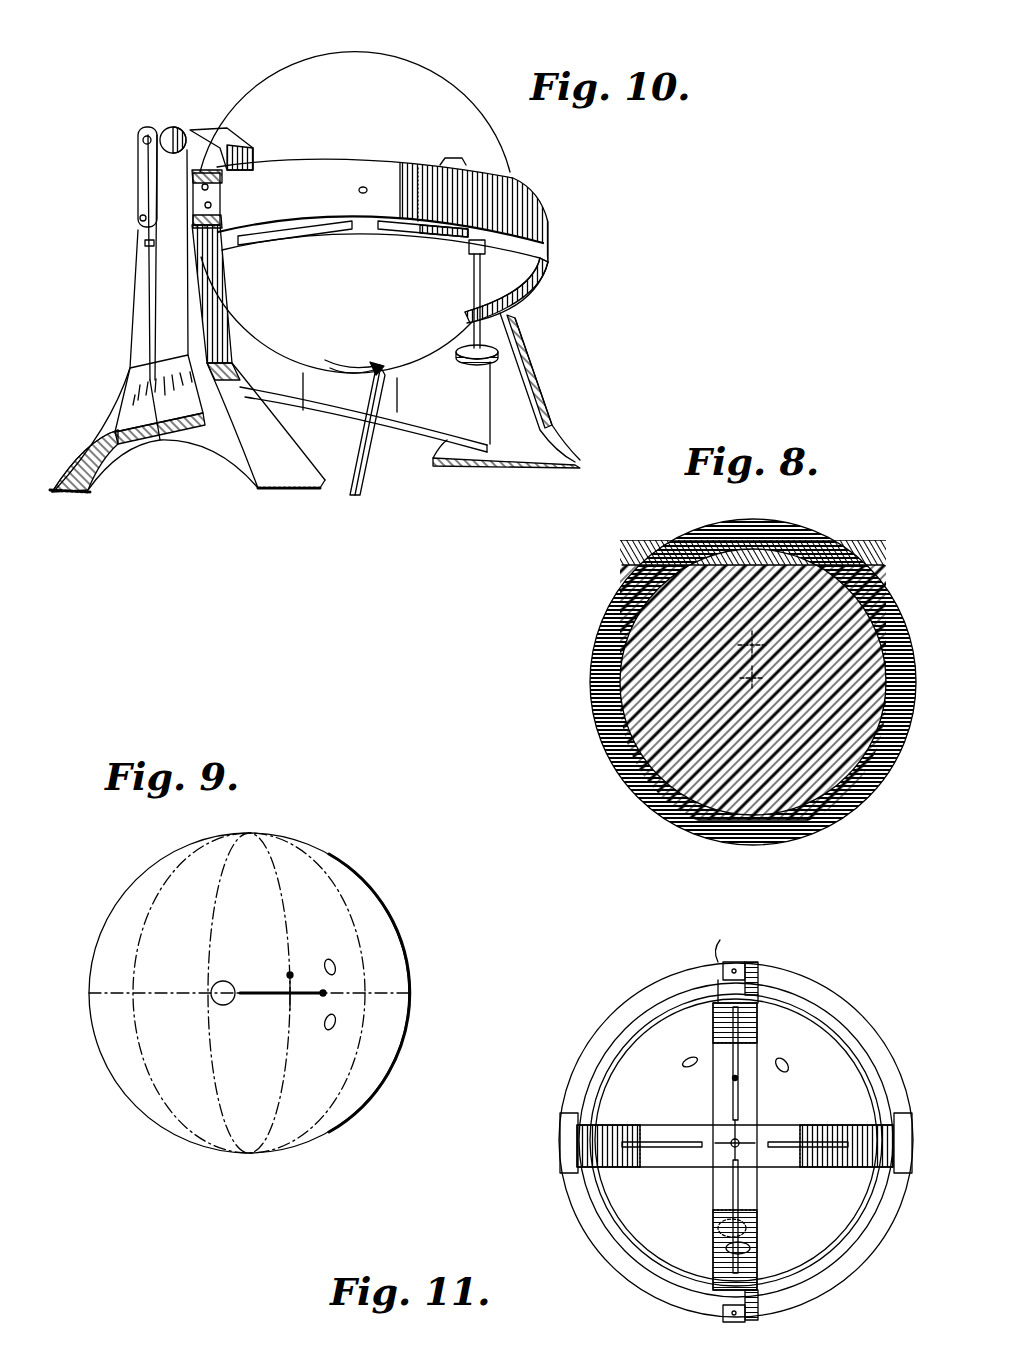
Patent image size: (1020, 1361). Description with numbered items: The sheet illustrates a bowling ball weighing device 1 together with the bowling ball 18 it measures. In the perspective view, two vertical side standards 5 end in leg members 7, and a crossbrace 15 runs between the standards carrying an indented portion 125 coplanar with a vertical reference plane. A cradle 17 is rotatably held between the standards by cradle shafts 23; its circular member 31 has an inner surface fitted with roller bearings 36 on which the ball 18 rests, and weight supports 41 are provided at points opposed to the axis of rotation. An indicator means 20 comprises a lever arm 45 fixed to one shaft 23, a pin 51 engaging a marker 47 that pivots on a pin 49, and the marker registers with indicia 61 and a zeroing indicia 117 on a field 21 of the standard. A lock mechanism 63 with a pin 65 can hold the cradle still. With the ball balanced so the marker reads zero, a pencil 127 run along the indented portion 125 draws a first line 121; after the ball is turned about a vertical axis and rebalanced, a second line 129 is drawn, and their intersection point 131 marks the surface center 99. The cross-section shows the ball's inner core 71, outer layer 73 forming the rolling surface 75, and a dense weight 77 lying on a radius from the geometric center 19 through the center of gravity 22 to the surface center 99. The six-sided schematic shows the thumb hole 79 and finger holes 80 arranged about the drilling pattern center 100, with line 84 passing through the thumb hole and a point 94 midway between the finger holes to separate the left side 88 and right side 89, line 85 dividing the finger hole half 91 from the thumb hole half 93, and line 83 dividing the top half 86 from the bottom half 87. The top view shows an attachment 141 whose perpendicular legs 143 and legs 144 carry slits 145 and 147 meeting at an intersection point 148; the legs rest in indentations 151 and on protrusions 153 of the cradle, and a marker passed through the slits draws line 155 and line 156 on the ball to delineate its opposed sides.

In FIG. 10, the bowling ball weighing device 1 is at (540, 168).
In FIG. 10, the side standards 5 is at (528, 374).
In FIG. 10, the leg members 7 is at (305, 440).
In FIG. 10, the crossbrace 15 is at (487, 426).
In FIG. 10, the cradle 17 is at (548, 213).
In FIG. 11, the cradle 17 is at (840, 1002).
In FIG. 10, the bowling ball 18 is at (398, 70).
In FIG. 8, the bowling ball 18 is at (595, 733).
In FIG. 9, the bowling ball 18 is at (345, 862).
In FIG. 11, the bowling ball 18 is at (855, 1048).
In FIG. 8, the geometric center 19 is at (756, 677).
In FIG. 10, the indicator means 20 is at (124, 188).
In FIG. 10, the field 21 is at (205, 410).
In FIG. 8, the center of gravity 22 is at (758, 642).
In FIG. 10, the cradle shafts 23 is at (136, 142).
In FIG. 10, the circular member 31 is at (550, 245).
In FIG. 11, the circular member 31 is at (575, 1214).
In FIG. 11, the roller bearings 36 is at (830, 1040).
In FIG. 10, the weight supports 41 is at (477, 360).
In FIG. 10, the lever arm 45 is at (143, 135).
In FIG. 10, the marker 47 is at (158, 328).
In FIG. 10, the pin 49 is at (144, 244).
In FIG. 10, the pin 51 is at (140, 219).
In FIG. 10, the indicia 61 is at (128, 396).
In FIG. 10, the lock mechanism 63 is at (222, 178).
In FIG. 10, the pin 65 is at (176, 128).
In FIG. 8, the inner core 71 is at (672, 784).
In FIG. 8, the outer layer 73 is at (610, 632).
In FIG. 8, the outer rolling surface 75 is at (650, 568).
In FIG. 9, the outer rolling surface 75 is at (170, 1112).
In FIG. 8, the weight 77 is at (783, 566).
In FIG. 9, the thumb hole 79 is at (226, 1003).
In FIG. 11, the thumb hole 79 is at (750, 1225).
In FIG. 9, the finger holes 80 is at (330, 958).
In FIG. 11, the finger holes 80 is at (682, 1062).
In FIG. 9, the line 83 is at (155, 900).
In FIG. 9, the line 84 is at (168, 990).
In FIG. 9, the line 85 is at (292, 855).
In FIG. 9, the top half 86 is at (200, 855).
In FIG. 9, the bottom half 87 is at (158, 865).
In FIG. 9, the left side 88 is at (395, 957).
In FIG. 9, the right side 89 is at (395, 1010).
In FIG. 9, the finger hole half 91 is at (288, 1145).
In FIG. 9, the thumb hole half 93 is at (248, 1148).
In FIG. 9, the point 94 is at (320, 996).
In FIG. 8, the surface center 99 is at (755, 520).
In FIG. 9, the surface center 99 is at (287, 975).
In FIG. 9, the drilling pattern center 100 is at (292, 992).
In FIG. 10, the zeroing indicia 117 is at (160, 440).
In FIG. 10, the first line 121 is at (372, 360).
In FIG. 10, the indented portion 125 is at (383, 428).
In FIG. 10, the pencil 127 is at (365, 495).
In FIG. 10, the second line 129 is at (384, 366).
In FIG. 10, the point 131 is at (338, 360).
In FIG. 11, the attachment 141 is at (718, 958).
In FIG. 11, the legs 143 is at (712, 1035).
In FIG. 11, the legs 144 is at (628, 1115).
In FIG. 11, the slit 145 is at (730, 1078).
In FIG. 11, the slit 147 is at (640, 1168).
In FIG. 11, the intersection point 148 is at (728, 1155).
In FIG. 11, the indentations 151 is at (768, 1000).
In FIG. 10, the protrusions 153 is at (445, 158).
In FIG. 11, the protrusions 153 is at (560, 1126).
In FIG. 11, the line 155 is at (740, 1122).
In FIG. 11, the line 156 is at (683, 1140).